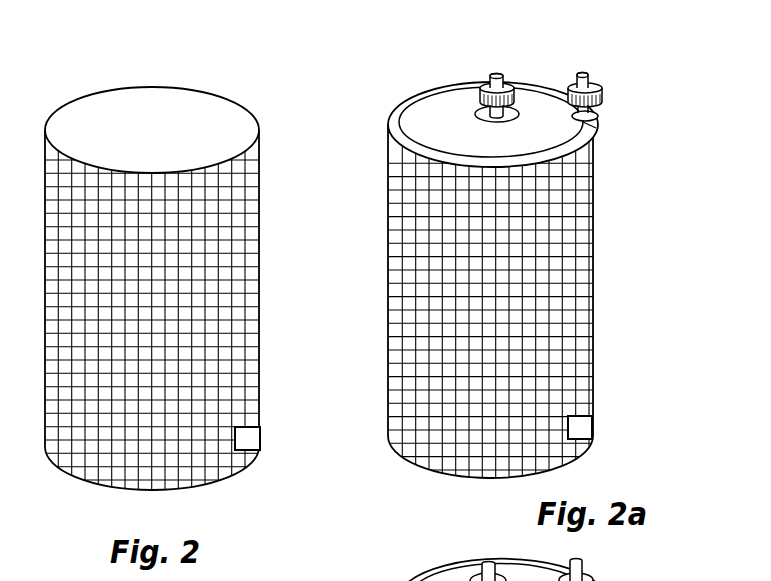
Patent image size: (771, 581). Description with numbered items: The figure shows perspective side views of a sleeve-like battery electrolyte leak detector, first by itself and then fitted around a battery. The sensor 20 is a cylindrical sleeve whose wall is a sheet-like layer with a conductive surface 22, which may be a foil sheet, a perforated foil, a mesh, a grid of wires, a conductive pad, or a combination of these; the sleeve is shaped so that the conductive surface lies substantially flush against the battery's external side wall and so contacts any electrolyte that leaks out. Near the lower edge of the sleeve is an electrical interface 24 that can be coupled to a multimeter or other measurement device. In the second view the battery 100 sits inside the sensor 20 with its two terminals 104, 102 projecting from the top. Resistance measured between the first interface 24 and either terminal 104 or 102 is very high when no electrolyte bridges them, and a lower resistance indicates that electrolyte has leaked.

In FIG. 2, the sleeve-like sensor 20 is at (242, 91).
In FIG. 2A, the sleeve-like sensor 20 is at (557, 276).
In FIG. 2, the conductive surface 22 is at (225, 247).
In FIG. 2A, the conductive surface 22 is at (415, 392).
In FIG. 2, the electrical interface 24 is at (249, 440).
In FIG. 2A, the electrical interface 24 is at (582, 425).
In FIG. 2A, the battery 100 is at (450, 127).
In FIG. 2A, the terminal 102 is at (602, 86).
In FIG. 2A, the terminal 104 is at (491, 92).